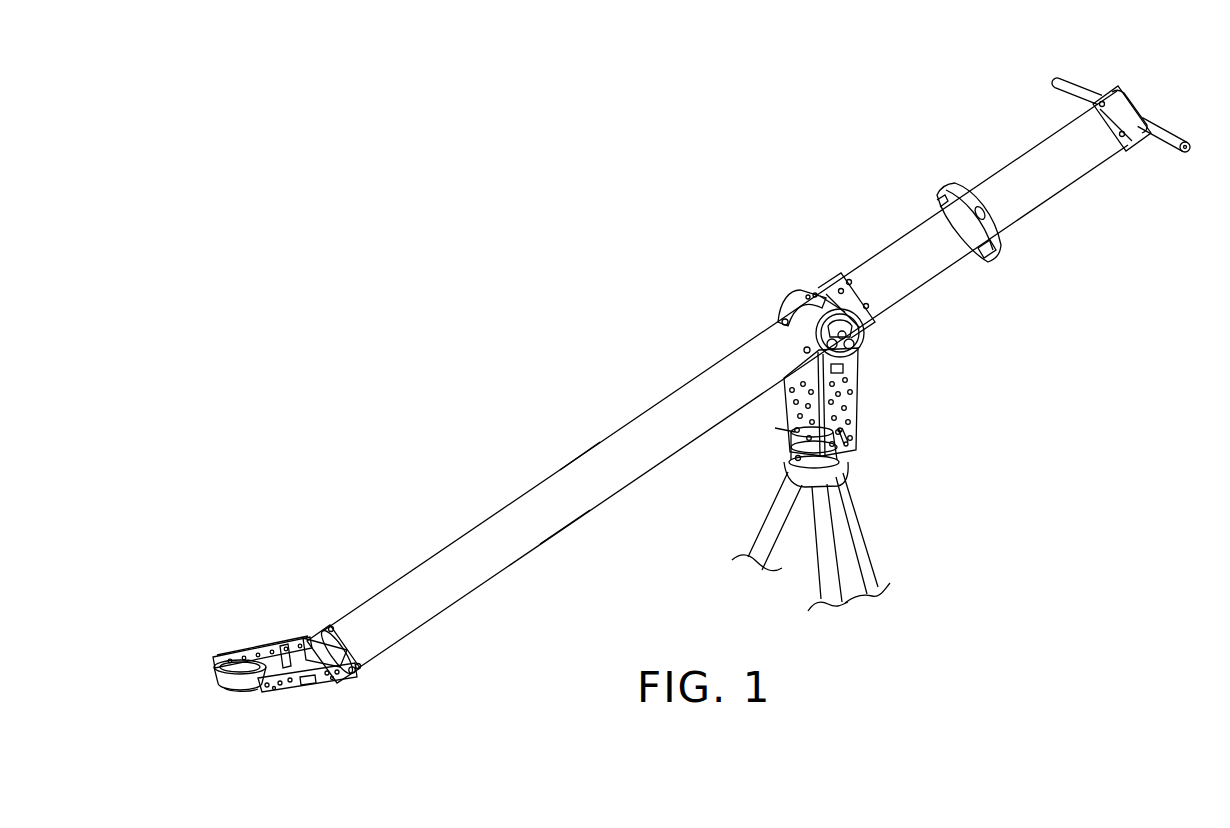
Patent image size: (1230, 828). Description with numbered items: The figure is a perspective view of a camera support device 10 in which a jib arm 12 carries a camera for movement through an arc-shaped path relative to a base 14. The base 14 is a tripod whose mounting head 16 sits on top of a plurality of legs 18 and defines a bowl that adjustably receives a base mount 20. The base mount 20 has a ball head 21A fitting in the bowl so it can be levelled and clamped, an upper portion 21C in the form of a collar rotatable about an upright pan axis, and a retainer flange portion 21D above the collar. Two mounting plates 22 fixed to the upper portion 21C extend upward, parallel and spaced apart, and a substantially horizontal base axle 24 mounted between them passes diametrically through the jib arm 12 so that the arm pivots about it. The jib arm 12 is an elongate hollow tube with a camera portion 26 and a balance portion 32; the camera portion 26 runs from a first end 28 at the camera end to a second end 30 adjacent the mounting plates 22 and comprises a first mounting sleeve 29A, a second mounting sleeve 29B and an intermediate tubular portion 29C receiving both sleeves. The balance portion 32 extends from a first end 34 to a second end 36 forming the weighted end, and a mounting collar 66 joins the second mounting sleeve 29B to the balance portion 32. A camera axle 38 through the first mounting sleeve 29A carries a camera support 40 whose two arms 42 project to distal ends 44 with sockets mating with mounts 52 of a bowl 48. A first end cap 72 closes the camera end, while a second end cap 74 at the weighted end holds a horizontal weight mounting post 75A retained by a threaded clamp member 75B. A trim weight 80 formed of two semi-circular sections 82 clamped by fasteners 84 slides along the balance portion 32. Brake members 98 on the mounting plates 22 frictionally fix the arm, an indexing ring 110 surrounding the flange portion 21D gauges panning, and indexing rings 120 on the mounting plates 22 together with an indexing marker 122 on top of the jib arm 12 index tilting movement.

The camera support device 10 is at (505, 132).
The jib arm 12 is at (537, 476).
The base 14 is at (937, 487).
The mounting head 16 is at (838, 476).
The legs 18 is at (858, 557).
The base mount 20 is at (906, 392).
The ball head 21A is at (800, 456).
The upper portion collar 21C is at (800, 446).
The retainer flange portion 21D is at (798, 430).
The mounting plates 22 is at (858, 410).
The base axle 24 is at (864, 331).
The camera portion 26 is at (560, 558).
The first end 28 is at (313, 586).
The first mounting sleeve 29A is at (330, 642).
The second mounting sleeve 29B is at (833, 290).
The intermediate tubular portion 29C is at (584, 468).
The second end 30 is at (730, 298).
The balance portion 32 is at (976, 142).
The first end of balance portion 34 is at (828, 250).
The second end of balance portion 36 is at (1080, 58).
The camera axle 38 is at (355, 674).
The camera support 40 is at (226, 593).
The arms 42 is at (262, 647).
The distal ends 44 is at (206, 662).
The bowl 48 is at (222, 690).
The mounts 52 is at (247, 690).
The mounting collar 66 is at (857, 290).
The first end cap 72 is at (283, 652).
The second end cap 74 is at (1124, 108).
The weight mounting post 75A is at (1162, 149).
The clamp member 75B is at (1147, 101).
The trim weight 80 is at (936, 186).
The semi-circular sections 82 is at (938, 206).
The fasteners 84 is at (987, 215).
The brake members 98 is at (864, 346).
The indexing ring 110 is at (848, 434).
The indexing rings 120 is at (786, 322).
The indexing marker 122 is at (802, 300).